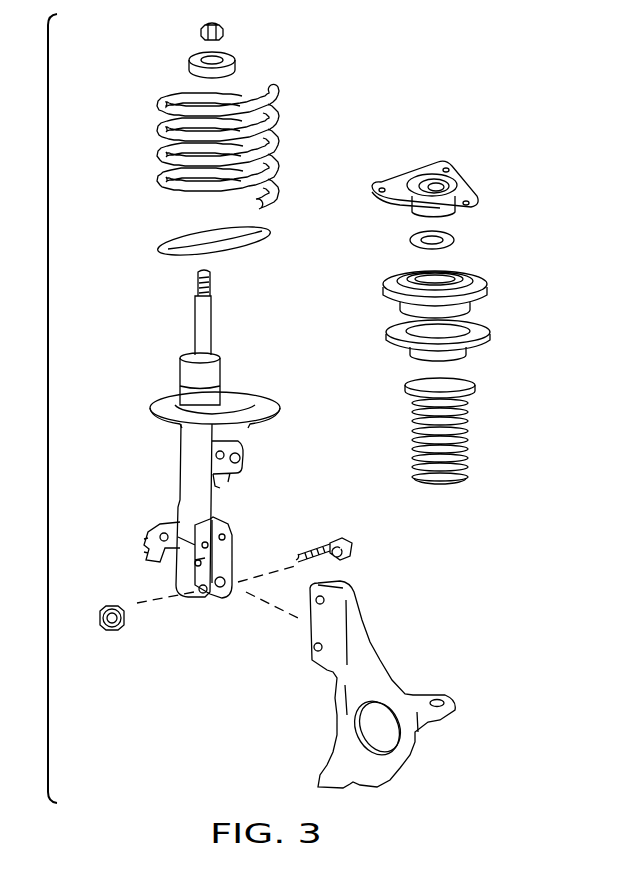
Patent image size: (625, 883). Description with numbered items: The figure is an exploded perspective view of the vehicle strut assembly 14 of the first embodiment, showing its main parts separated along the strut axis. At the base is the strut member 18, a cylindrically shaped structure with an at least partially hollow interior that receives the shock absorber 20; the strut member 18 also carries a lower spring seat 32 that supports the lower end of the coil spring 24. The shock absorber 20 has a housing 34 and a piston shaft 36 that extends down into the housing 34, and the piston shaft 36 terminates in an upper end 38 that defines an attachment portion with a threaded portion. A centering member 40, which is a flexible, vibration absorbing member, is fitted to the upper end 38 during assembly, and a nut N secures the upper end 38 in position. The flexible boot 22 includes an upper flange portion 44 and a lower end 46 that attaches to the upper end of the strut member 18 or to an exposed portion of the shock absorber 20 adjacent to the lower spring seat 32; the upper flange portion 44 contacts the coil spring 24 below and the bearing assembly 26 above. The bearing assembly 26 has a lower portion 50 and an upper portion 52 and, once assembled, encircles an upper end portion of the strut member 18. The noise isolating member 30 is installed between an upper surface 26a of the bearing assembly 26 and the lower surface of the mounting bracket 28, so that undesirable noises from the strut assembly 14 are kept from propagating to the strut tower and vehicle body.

The vehicle strut assembly 14 is at (48, 333).
The nut N is at (203, 27).
The centering member 40 is at (237, 62).
The coil spring 24 is at (160, 151).
The shock absorber 20 is at (198, 309).
The upper end 38 is at (212, 284).
The piston shaft 36 is at (195, 310).
The housing 34 is at (188, 370).
The lower spring seat 32 is at (245, 398).
The strut member 18 is at (178, 464).
The mounting bracket 28 is at (476, 180).
The noise isolating member 30 is at (455, 238).
The bearing assembly 26 is at (456, 301).
The upper surface 26a is at (400, 277).
The upper portion 52 is at (488, 278).
The lower portion 50 is at (490, 330).
The upper flange portion 44 is at (410, 385).
The flexible boot 22 is at (439, 433).
The lower end 46 is at (446, 479).